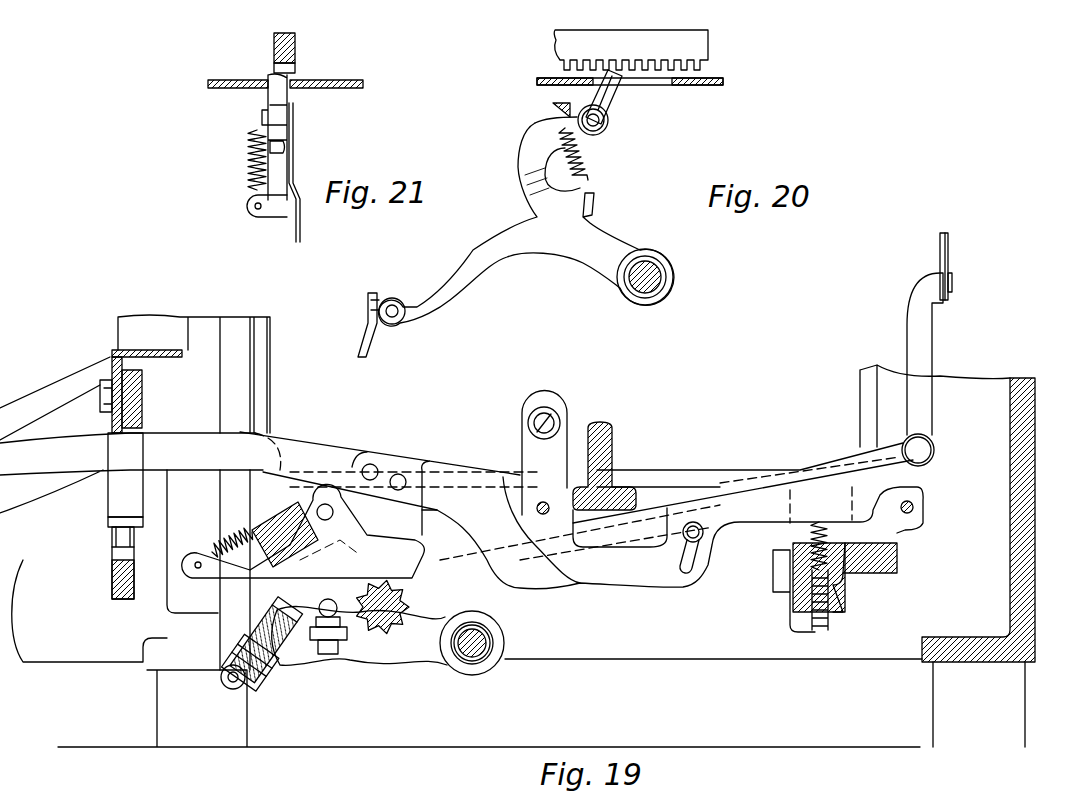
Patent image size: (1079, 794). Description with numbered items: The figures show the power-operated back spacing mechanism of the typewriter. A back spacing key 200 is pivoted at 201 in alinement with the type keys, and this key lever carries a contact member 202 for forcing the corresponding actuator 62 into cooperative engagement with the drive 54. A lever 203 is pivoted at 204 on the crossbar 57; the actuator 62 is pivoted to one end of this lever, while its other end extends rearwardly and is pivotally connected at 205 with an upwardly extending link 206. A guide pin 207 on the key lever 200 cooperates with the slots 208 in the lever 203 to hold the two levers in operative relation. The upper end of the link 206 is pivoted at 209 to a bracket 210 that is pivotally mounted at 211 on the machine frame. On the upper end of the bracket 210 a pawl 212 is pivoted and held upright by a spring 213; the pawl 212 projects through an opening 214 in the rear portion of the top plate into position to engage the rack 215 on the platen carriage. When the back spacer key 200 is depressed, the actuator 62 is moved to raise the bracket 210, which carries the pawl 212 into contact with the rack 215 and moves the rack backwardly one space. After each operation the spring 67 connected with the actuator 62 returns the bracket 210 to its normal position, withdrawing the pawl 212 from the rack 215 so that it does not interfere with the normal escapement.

In FIG. 19, the drive 54 is at (405, 588).
In FIG. 19, the crossbar 57 is at (577, 514).
In FIG. 19, the actuator 62 is at (490, 463).
In FIG. 19, the spring 67 is at (222, 532).
In FIG. 19, the back spacing key 200 is at (523, 577).
In FIG. 19, the pivot 201 is at (922, 483).
In FIG. 19, the contact member 202 is at (423, 520).
In FIG. 19, the lever 203 is at (665, 578).
In FIG. 19, the pivot 204 is at (549, 509).
In FIG. 19, the pivotal connection 205 is at (927, 450).
In FIG. 19, the link 206 is at (920, 338).
In FIG. 19, the guide pin 207 is at (703, 540).
In FIG. 19, the slots 208 is at (690, 575).
In FIG. 20, the pivot 209 is at (397, 325).
In FIG. 19, the pivot 209 is at (952, 273).
In FIG. 20, the bracket 210 is at (578, 252).
In FIG. 20, the pivot 211 is at (658, 268).
In FIG. 20, the pawl 212 is at (620, 97).
In FIG. 20, the spring 213 is at (585, 163).
In FIG. 20, the opening 214 is at (657, 83).
In FIG. 20, the rack 215 is at (693, 45).